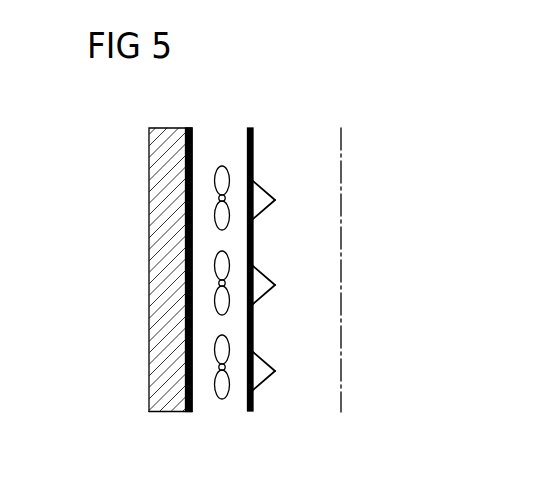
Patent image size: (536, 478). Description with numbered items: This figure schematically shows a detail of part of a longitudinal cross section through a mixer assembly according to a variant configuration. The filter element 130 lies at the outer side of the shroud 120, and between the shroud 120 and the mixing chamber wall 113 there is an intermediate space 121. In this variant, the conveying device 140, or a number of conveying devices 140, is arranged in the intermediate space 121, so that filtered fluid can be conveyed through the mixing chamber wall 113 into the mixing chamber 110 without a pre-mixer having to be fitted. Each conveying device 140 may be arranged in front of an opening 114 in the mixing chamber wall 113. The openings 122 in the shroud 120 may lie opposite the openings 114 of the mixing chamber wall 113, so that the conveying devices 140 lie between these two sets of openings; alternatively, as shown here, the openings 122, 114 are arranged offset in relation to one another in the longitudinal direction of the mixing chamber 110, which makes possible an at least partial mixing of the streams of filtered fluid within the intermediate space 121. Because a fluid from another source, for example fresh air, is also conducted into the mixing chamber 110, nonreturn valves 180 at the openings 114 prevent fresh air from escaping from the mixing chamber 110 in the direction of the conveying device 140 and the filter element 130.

The mixing chamber 110 is at (315, 143).
The mixing chamber wall 113 is at (252, 405).
The opening in the mixing chamber wall 114 is at (262, 186).
The shroud 120 is at (184, 142).
The intermediate space 121 is at (216, 143).
The opening in the shroud 122 is at (180, 200).
The filter element 130 is at (152, 404).
The conveying device 140 is at (197, 179).
The nonreturn valve 180 is at (262, 218).